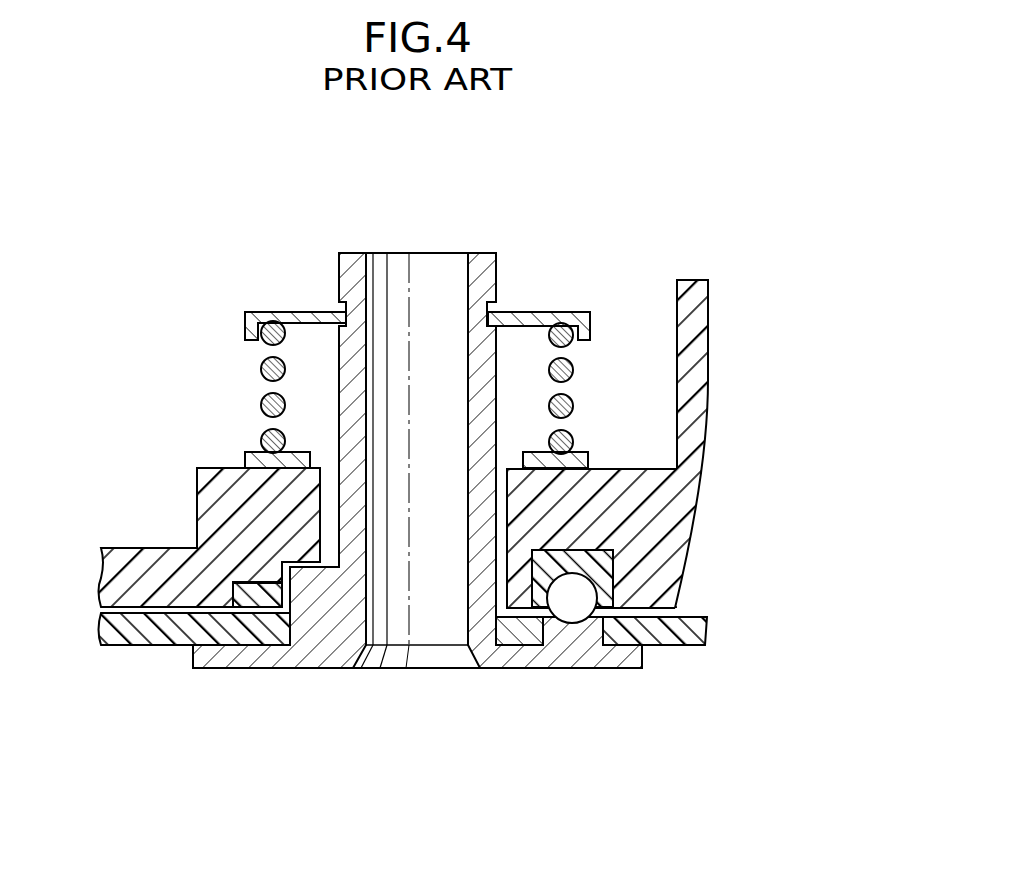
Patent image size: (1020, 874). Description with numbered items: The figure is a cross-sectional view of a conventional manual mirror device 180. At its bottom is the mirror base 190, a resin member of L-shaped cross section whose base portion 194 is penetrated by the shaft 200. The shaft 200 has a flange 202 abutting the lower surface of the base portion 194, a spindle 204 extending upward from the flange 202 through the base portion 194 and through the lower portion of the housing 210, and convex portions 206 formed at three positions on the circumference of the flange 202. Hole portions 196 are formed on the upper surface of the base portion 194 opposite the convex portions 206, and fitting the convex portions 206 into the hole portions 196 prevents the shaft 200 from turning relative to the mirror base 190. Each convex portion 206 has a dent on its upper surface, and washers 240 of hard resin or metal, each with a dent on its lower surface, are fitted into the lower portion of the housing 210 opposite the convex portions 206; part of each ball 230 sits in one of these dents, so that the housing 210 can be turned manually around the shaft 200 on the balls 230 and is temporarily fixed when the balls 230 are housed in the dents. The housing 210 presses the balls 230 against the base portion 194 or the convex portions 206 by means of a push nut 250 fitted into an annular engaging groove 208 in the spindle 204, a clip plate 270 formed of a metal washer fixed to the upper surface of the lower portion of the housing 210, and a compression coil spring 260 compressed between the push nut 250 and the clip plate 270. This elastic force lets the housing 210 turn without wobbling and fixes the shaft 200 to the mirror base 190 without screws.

The manual mirror device 180 is at (652, 195).
The mirror base 190 is at (718, 626).
The base portion 194 is at (143, 646).
The hole portions 196 is at (596, 640).
The shaft 200 is at (335, 267).
The flange 202 is at (232, 669).
The spindle 204 is at (478, 252).
The convex portions 206 is at (555, 624).
The annular engaging groove 208 is at (500, 309).
The housing 210 is at (212, 467).
The balls 230 is at (592, 573).
The washers 240 is at (612, 521).
The push nut 250 is at (530, 312).
The compression coil spring 260 is at (573, 366).
The clip plate 270 is at (578, 452).